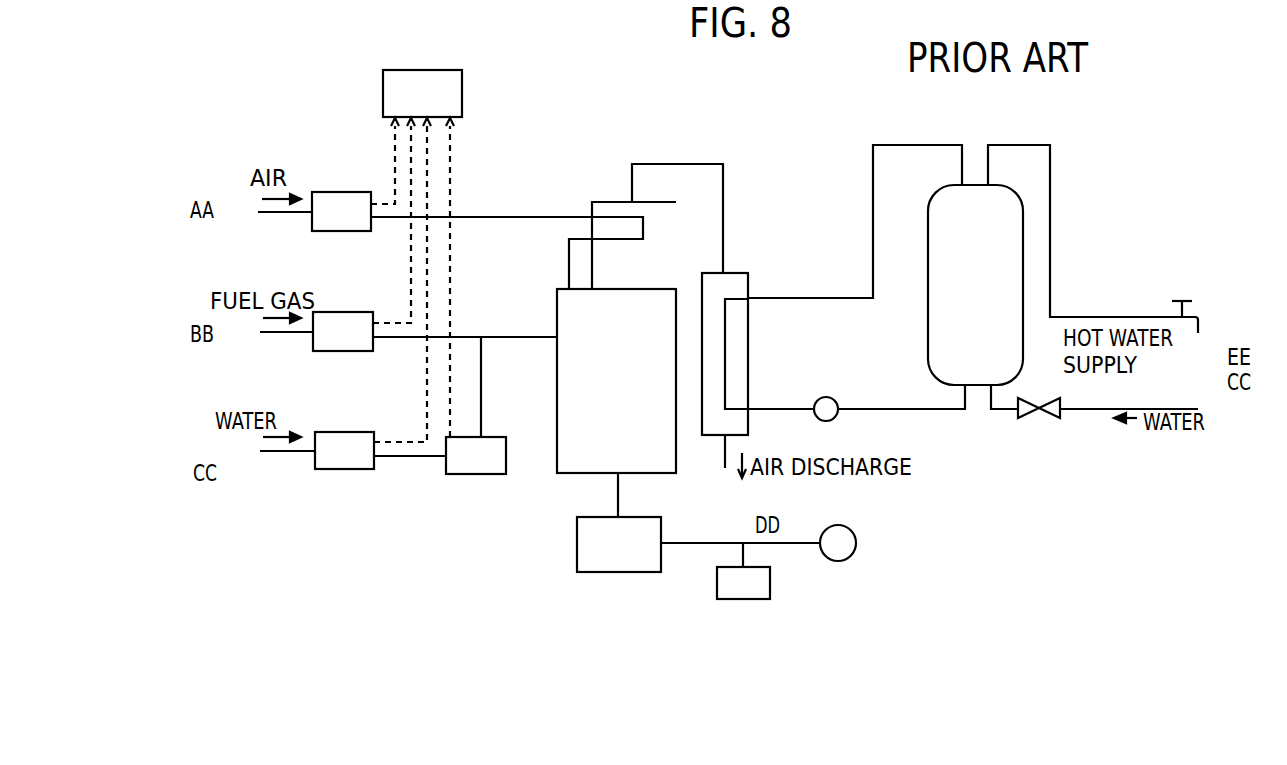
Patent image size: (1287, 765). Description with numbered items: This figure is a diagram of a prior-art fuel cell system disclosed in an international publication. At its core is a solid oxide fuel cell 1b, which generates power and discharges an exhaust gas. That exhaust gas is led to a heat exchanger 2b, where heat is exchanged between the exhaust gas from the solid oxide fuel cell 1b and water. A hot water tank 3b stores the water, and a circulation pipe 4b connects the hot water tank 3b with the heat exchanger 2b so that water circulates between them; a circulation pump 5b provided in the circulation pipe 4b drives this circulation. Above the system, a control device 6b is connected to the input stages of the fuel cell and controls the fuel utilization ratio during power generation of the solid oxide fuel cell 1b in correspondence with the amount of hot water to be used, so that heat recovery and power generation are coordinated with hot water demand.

The solid oxide fuel cell 1b is at (650, 475).
The heat exchanger 2b is at (738, 273).
The hot water tank 3b is at (938, 193).
The circulation pipe 4b is at (882, 407).
The circulation pump 5b is at (830, 397).
The control device 6b is at (443, 70).